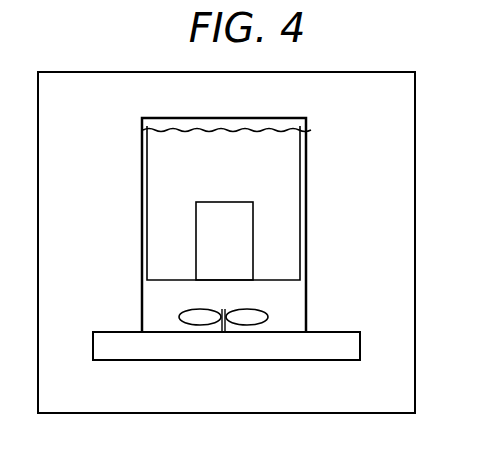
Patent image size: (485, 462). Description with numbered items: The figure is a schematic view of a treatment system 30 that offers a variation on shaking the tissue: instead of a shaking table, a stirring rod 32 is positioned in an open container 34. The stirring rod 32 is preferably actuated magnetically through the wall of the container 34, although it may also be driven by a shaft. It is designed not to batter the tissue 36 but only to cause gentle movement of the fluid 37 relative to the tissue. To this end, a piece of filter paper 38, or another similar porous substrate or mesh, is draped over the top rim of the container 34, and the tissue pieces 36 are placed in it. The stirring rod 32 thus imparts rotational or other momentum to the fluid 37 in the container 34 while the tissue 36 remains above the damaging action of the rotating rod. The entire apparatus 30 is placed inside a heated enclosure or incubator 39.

The treatment system 30 is at (326, 147).
The stirring rod 32 is at (268, 311).
The container 34 is at (306, 265).
The tissue 36 is at (253, 221).
The fluid 37 is at (165, 129).
The filter paper 38 is at (160, 281).
The heated enclosure or incubator 39 is at (240, 413).